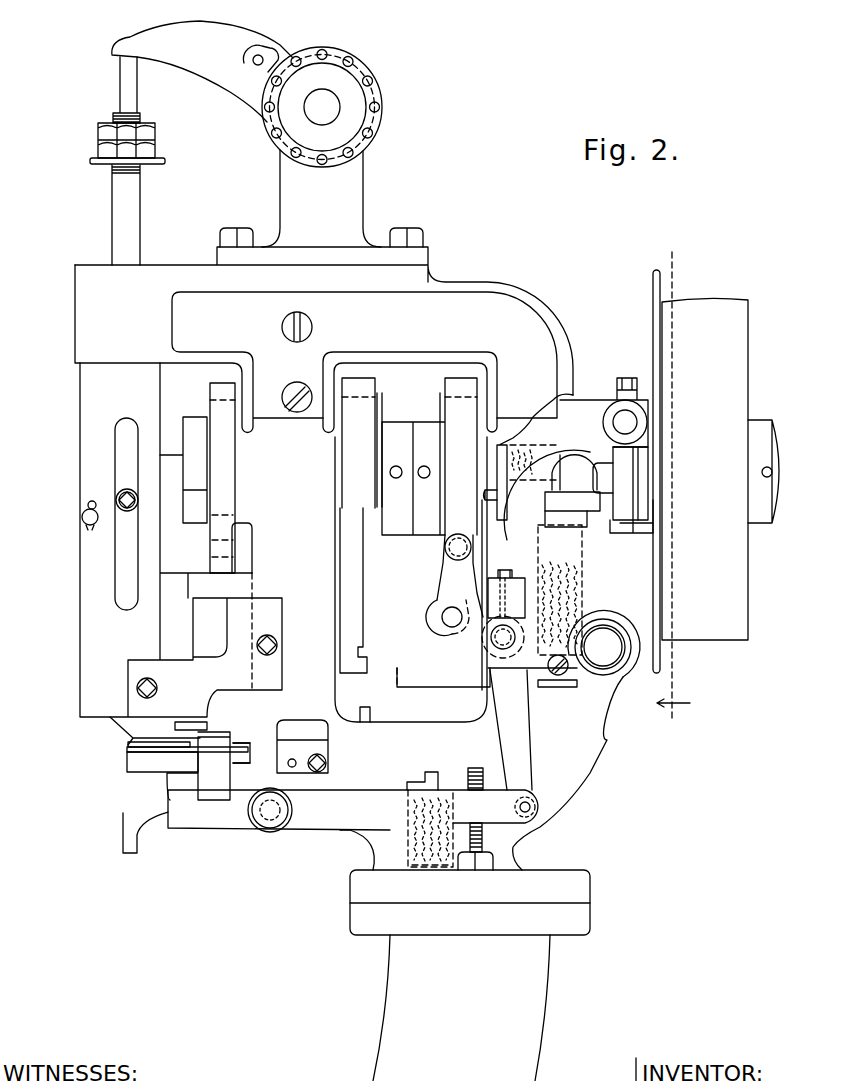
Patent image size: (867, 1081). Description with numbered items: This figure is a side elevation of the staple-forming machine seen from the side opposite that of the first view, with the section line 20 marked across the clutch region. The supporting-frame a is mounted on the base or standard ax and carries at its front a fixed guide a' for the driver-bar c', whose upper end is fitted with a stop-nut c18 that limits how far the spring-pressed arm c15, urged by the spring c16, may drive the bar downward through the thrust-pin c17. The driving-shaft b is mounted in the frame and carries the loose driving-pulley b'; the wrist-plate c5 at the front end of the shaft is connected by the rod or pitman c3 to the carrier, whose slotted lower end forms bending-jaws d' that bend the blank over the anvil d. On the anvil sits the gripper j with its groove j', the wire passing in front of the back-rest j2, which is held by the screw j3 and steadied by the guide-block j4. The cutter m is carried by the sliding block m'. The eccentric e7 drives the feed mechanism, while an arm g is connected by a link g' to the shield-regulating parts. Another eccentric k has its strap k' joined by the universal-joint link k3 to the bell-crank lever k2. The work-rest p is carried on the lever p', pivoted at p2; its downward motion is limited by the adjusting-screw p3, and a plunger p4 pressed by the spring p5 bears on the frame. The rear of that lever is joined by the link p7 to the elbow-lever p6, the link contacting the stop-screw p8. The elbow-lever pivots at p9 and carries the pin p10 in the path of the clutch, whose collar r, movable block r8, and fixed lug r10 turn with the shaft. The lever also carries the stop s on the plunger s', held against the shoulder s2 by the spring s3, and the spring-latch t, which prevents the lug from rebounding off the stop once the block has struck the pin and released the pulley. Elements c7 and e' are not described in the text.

The supporting-frame a is at (481, 806).
The fixed guide a' is at (303, 330).
The base or standard ax is at (461, 1008).
The driving-shaft b is at (774, 471).
The driving-pulley b' is at (708, 471).
The driver-bar c' is at (142, 215).
The rod or pitman c3 is at (172, 520).
The wrist-plate c5 is at (196, 427).
The clamp screw c7 is at (82, 518).
The arm c15 is at (202, 71).
The spring c16 is at (276, 47).
The thrust-pin c17 is at (138, 89).
The stop-nut c18 is at (147, 154).
The anvil d is at (142, 801).
The bending-jaws d' is at (140, 761).
The bar e' is at (374, 590).
The eccentric e7 is at (377, 413).
The arm g is at (411, 579).
The link g' is at (389, 709).
The gripper j is at (131, 735).
The groove j' is at (161, 782).
The guide or back-rest j2 is at (223, 743).
The screw j3 is at (208, 766).
The guide-block j4 is at (157, 740).
The eccentric k is at (429, 456).
The strap k' is at (438, 544).
The bell-crank lever k2 is at (476, 638).
The universal-joint link k3 is at (447, 568).
The cutter m is at (207, 716).
The block m' is at (262, 605).
The work-rest p is at (141, 853).
The lever p' is at (196, 850).
The pivot p2 is at (270, 812).
The adjusting-screw p3 is at (483, 837).
The plunger p4 is at (425, 773).
The spring p5 is at (407, 807).
The elbow-lever p6 is at (563, 548).
The link p7 is at (530, 725).
The stop-screw p8 is at (499, 577).
The pivot p9 is at (564, 648).
The pin p10 is at (630, 422).
The collar r is at (617, 540).
The movable block r8 is at (643, 466).
The fixed lug r10 is at (602, 480).
The stop s is at (572, 502).
The plunger s' is at (576, 522).
The shoulder s2 is at (555, 470).
The spring s3 is at (598, 603).
The spring-latch t is at (586, 453).
The section line 20 is at (673, 491).